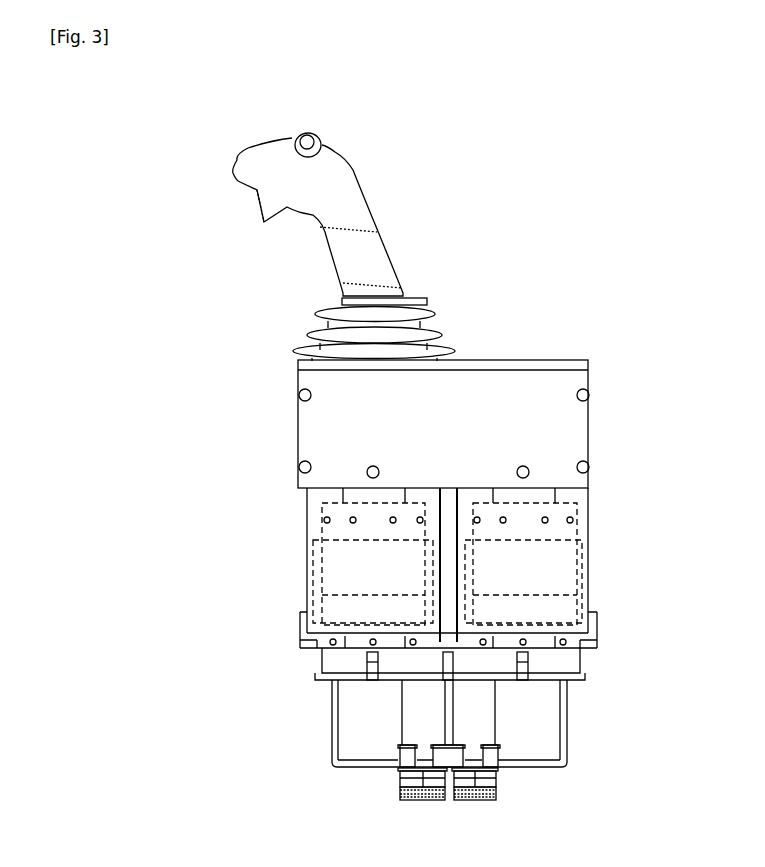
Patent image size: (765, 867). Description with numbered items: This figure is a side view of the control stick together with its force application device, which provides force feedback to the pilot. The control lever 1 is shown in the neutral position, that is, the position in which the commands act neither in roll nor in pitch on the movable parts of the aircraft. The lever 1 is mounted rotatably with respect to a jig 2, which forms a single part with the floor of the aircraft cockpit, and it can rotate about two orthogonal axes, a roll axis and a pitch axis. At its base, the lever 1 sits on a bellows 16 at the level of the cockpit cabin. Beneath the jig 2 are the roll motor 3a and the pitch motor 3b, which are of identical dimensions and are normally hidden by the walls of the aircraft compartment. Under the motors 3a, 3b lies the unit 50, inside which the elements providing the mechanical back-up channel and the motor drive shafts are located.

The control lever 1 is at (385, 188).
The bellows boot 16 is at (452, 323).
The jig 2 is at (598, 417).
The roll motor 3a is at (352, 567).
The pitch motor 3b is at (542, 567).
The unit 50 is at (568, 723).